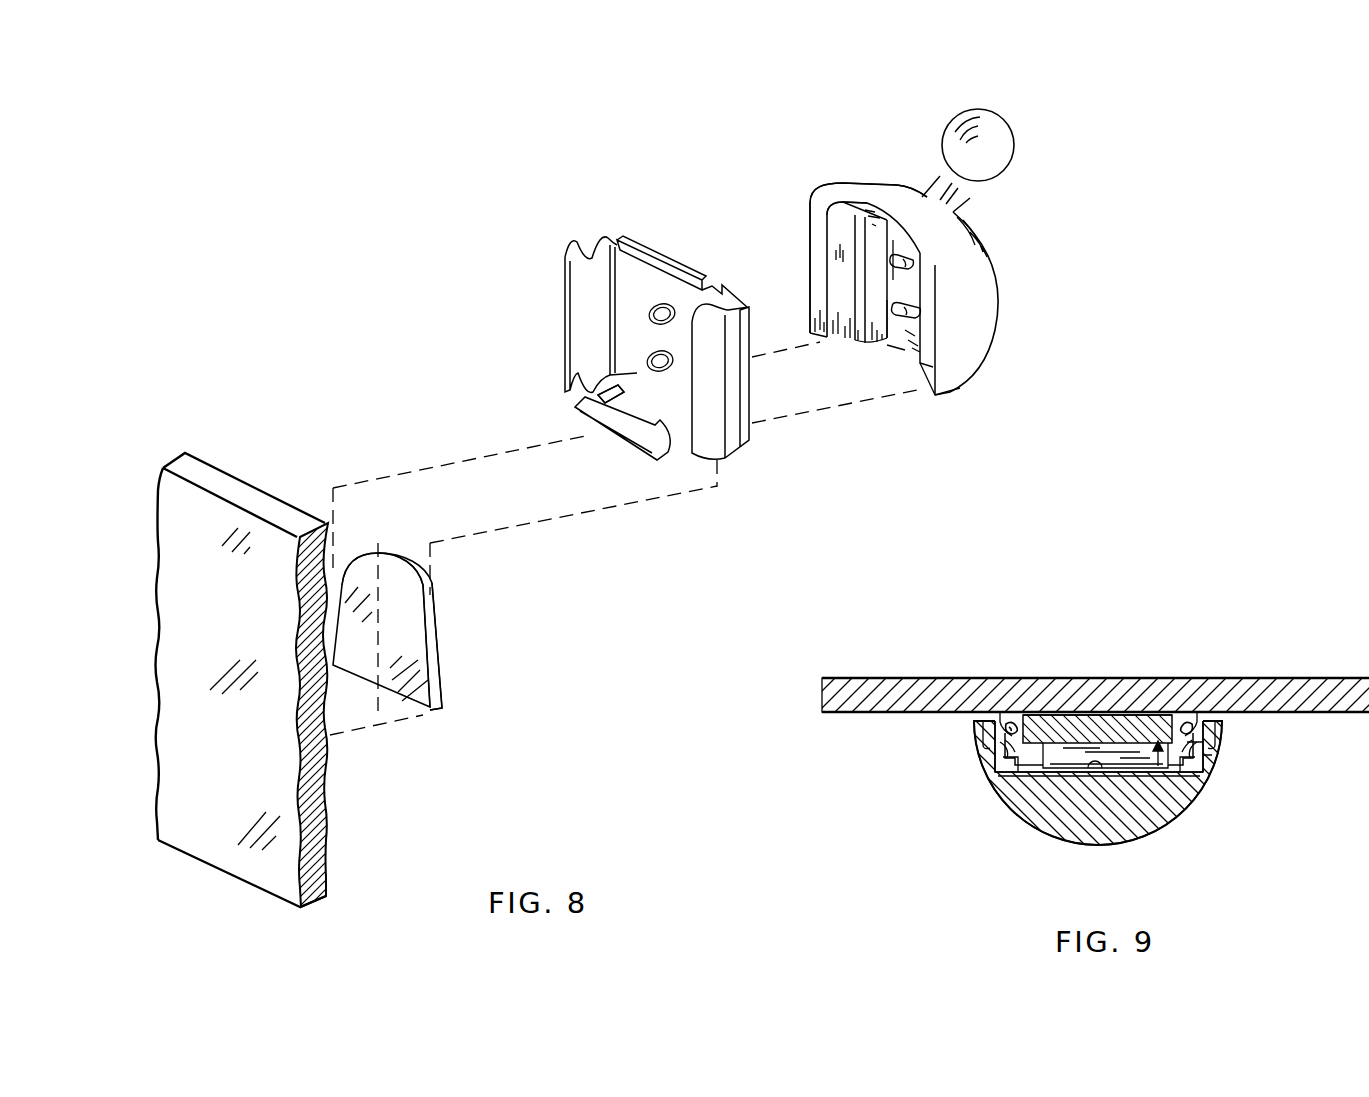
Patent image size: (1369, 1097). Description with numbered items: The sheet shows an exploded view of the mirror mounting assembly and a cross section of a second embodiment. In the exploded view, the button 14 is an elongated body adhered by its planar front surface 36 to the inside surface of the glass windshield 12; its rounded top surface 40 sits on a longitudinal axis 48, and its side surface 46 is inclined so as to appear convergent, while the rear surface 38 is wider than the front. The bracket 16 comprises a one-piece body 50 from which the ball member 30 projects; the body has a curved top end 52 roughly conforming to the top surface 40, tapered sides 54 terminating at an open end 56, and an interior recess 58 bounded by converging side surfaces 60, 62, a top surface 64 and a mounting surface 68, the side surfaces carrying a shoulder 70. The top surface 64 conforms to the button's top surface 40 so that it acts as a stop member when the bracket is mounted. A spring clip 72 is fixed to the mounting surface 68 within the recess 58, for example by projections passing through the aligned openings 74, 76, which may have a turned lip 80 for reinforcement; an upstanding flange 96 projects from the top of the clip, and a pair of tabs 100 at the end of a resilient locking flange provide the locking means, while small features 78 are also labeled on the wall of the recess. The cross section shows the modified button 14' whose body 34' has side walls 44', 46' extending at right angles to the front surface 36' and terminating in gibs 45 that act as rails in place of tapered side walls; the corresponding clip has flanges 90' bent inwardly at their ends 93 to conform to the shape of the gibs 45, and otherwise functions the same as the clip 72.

In FIG. 8, the glass windshield 12 is at (180, 618).
In FIG. 9, the glass windshield 12 is at (1270, 685).
In FIG. 8, the button 14 is at (422, 631).
In FIG. 9, the button (modified form) 14' is at (1114, 783).
In FIG. 8, the bracket 16 is at (990, 243).
In FIG. 8, the ball member 30 is at (1003, 140).
In FIG. 9, the body (of modified button) 34' is at (1093, 684).
In FIG. 8, the front surface 36 is at (417, 630).
In FIG. 9, the front surface (of modified button) 36' is at (1097, 673).
In FIG. 9, the rear surface 38 is at (1030, 753).
In FIG. 8, the top surface 40 is at (392, 555).
In FIG. 9, the side wall (of modified button) 44' is at (979, 689).
In FIG. 9, the gibs 45 is at (1007, 743).
In FIG. 8, the side surface 46 is at (463, 646).
In FIG. 9, the side wall (of modified button) 46' is at (1214, 689).
In FIG. 8, the longitudinal axis 48 is at (378, 707).
In FIG. 9, the body 50 is at (1123, 810).
In FIG. 8, the top end 52 is at (910, 187).
In FIG. 9, the tapered sides 54 is at (983, 730).
In FIG. 8, the open end 56 is at (893, 353).
In FIG. 8, the interior recess 58 is at (897, 328).
In FIG. 8, the side surface (of recess) 60 is at (838, 299).
In FIG. 9, the side surface (of recess) 60 is at (1010, 753).
In FIG. 8, the side surface (of recess) 62 is at (910, 367).
In FIG. 9, the side surface (of recess) 62 is at (1222, 758).
In FIG. 8, the top surface (of recess) 64 is at (877, 232).
In FIG. 8, the mounting surface 68 is at (893, 280).
In FIG. 9, the mounting surface 68 is at (1057, 767).
In FIG. 8, the shoulder 70 is at (855, 330).
In FIG. 9, the shoulder 70 is at (1003, 757).
In FIG. 8, the spring clip 72 is at (537, 315).
In FIG. 8, the opening 74 is at (655, 352).
In FIG. 8, the opening 76 is at (656, 304).
In FIG. 8, the retaining tabs 78 is at (853, 207).
In FIG. 8, the turned lip 80 is at (661, 372).
In FIG. 9, the flanges (of modified clip) 90' is at (1093, 696).
In FIG. 9, the ends (of flanges) 93 is at (1010, 737).
In FIG. 8, the upstanding flange 96 is at (673, 267).
In FIG. 8, the tabs 100 is at (650, 450).